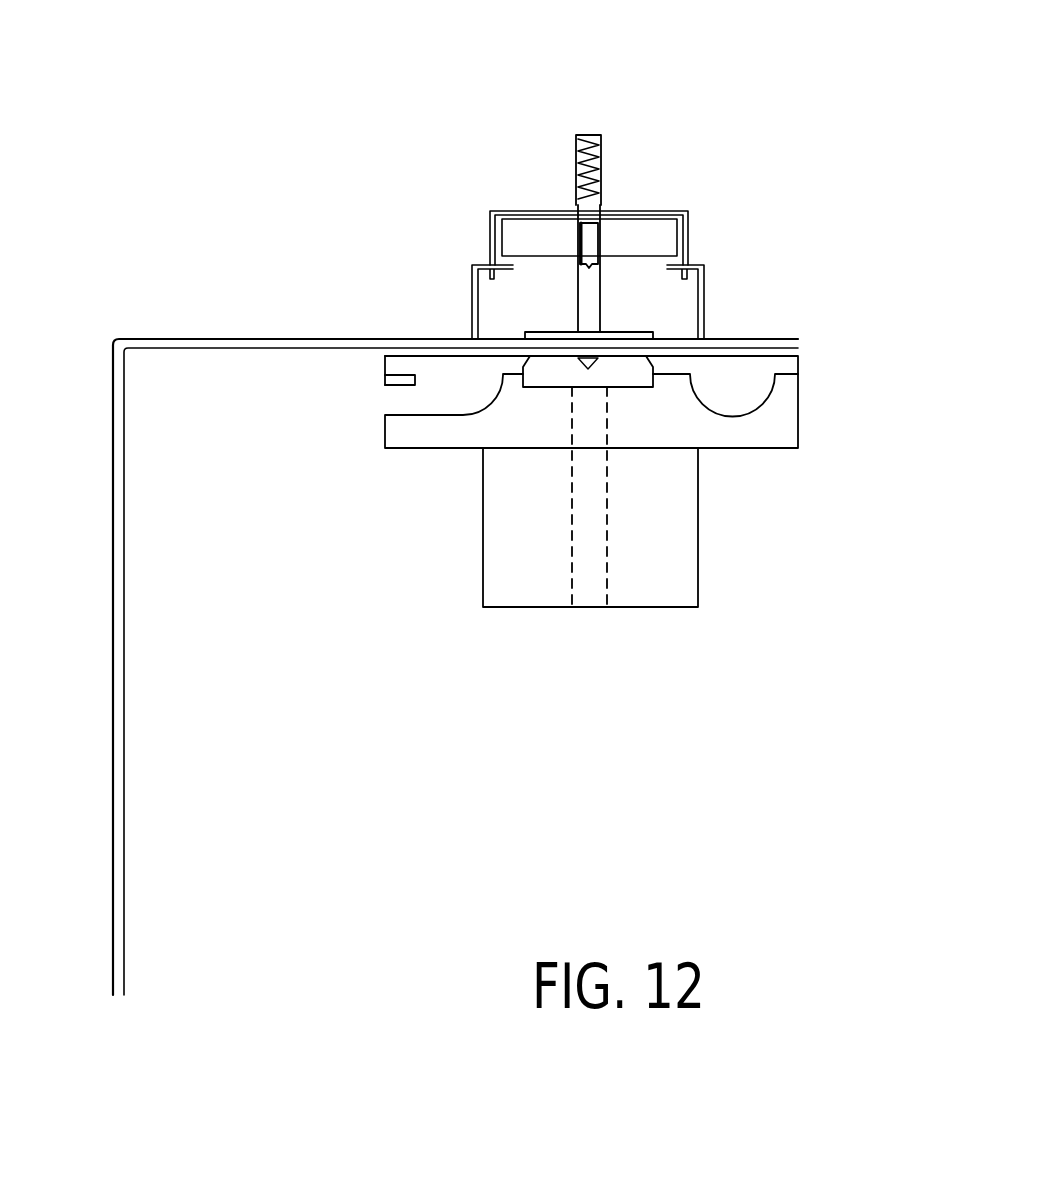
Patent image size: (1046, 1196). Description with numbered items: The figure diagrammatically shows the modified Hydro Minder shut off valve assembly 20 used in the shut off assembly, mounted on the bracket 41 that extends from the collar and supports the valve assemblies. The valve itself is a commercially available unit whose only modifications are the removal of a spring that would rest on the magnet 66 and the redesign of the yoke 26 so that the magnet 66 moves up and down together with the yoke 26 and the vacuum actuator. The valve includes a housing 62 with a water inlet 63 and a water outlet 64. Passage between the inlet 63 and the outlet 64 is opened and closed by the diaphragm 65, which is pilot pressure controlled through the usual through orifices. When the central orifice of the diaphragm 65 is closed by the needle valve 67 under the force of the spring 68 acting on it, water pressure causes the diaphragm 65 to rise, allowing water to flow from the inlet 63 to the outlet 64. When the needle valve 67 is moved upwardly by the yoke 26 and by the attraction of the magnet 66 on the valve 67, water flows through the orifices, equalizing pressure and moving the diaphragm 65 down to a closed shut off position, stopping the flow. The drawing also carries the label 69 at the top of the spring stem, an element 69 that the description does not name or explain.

The shut off valve assembly 20 is at (652, 212).
The yoke 26 is at (472, 285).
The bracket 41 is at (112, 840).
The housing 62 is at (787, 420).
The water inlet 63 is at (388, 397).
The water outlet 64 is at (592, 554).
The diaphragm 65 is at (637, 363).
The magnet 66 is at (655, 242).
The needle valve 67 is at (583, 250).
The spring 68 is at (589, 135).
The spring 69 is at (598, 140).